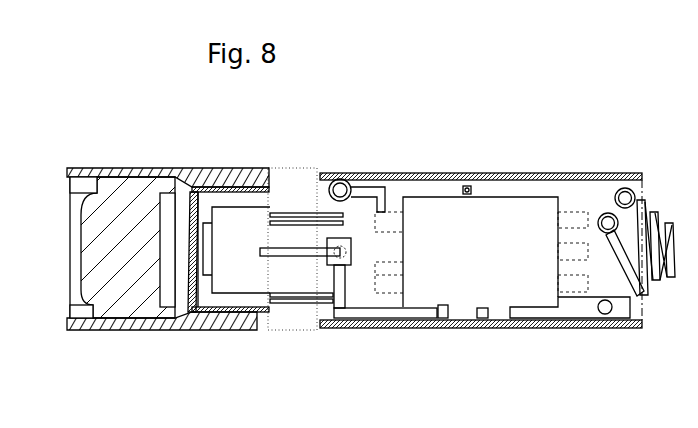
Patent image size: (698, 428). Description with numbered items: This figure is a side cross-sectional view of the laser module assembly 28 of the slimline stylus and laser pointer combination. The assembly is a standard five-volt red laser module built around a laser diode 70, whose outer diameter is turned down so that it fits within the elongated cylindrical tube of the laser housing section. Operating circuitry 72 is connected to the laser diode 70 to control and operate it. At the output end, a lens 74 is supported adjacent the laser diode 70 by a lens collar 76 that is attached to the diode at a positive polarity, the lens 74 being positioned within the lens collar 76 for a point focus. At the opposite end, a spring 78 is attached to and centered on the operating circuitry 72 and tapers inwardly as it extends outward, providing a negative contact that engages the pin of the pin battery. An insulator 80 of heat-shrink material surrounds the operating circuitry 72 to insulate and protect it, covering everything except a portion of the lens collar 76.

The laser module assembly 28 is at (337, 156).
The laser diode 70 is at (297, 338).
The operating circuitry 72 is at (457, 292).
The lens 74 is at (123, 281).
The lens collar 76 is at (223, 338).
The spring 78 is at (667, 282).
The insulator 80 is at (587, 333).